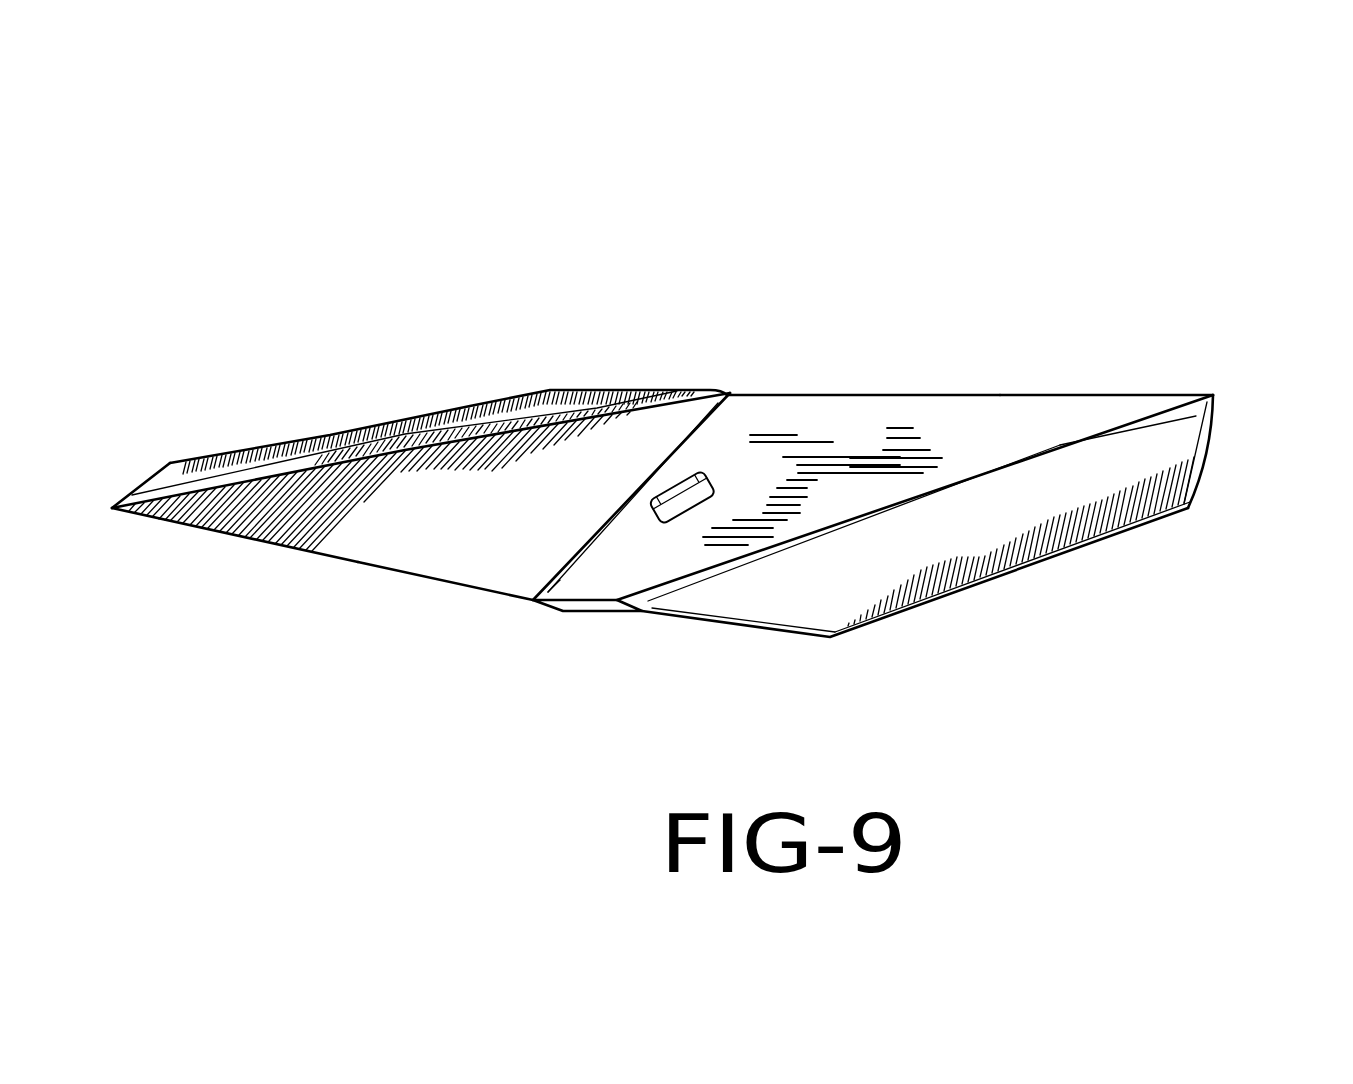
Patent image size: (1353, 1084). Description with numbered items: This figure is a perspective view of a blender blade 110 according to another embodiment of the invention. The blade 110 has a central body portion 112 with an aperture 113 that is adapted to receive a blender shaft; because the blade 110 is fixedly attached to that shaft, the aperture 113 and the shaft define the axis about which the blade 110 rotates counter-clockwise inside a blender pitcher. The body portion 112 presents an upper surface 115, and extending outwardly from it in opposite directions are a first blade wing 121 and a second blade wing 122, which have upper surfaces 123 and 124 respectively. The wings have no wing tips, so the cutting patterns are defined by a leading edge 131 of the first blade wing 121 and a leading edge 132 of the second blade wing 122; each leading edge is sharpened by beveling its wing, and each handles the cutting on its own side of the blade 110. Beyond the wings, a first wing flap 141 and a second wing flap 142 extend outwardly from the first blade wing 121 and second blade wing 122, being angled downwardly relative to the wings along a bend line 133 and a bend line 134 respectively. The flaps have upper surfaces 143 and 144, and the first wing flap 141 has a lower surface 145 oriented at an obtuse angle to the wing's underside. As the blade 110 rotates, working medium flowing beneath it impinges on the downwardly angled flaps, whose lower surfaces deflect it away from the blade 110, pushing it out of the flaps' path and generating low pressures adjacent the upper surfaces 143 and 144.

The blender blade 110 is at (232, 311).
The body portion 112 is at (818, 420).
The aperture 113 is at (690, 495).
The upper surface 115 is at (607, 568).
The first blade wing 121 is at (1040, 385).
The second blade wing 122 is at (350, 572).
The upper surface 123 is at (1108, 412).
The upper surface 124 is at (293, 527).
The leading edge 131 is at (950, 395).
The leading edge 132 is at (417, 578).
The bend line 133 is at (1053, 450).
The bend line 134 is at (540, 428).
The first wing flap 141 is at (992, 590).
The second wing flap 142 is at (380, 422).
The upper surface 143 is at (787, 582).
The upper surface 144 is at (283, 443).
The lower surface 145 is at (1147, 530).